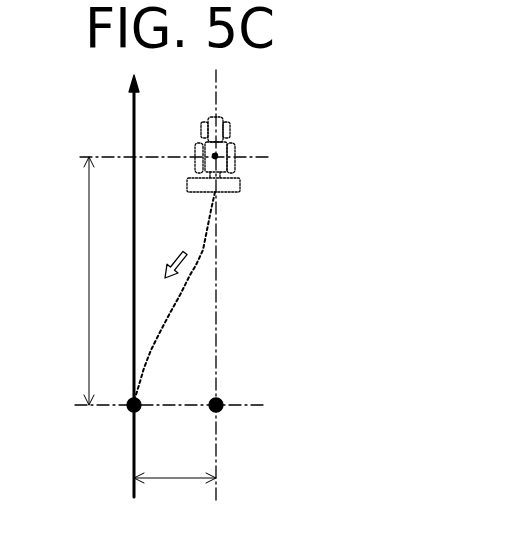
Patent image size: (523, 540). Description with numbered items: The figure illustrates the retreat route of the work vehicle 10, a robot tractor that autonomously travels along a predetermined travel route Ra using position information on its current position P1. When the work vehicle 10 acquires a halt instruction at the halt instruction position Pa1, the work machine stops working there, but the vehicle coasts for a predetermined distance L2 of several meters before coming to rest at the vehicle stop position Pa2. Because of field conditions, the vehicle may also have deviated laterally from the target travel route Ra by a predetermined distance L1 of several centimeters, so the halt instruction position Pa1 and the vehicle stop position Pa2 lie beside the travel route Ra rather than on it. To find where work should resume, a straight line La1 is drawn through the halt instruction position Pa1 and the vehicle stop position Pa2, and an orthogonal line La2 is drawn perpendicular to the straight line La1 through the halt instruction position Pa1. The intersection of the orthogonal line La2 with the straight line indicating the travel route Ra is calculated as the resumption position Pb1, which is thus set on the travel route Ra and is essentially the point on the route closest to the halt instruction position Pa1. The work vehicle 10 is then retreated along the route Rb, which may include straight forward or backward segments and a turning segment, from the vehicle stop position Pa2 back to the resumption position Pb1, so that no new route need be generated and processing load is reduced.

The work vehicle 10 is at (258, 130).
The current position P1 is at (217, 157).
The vehicle stop position Pa2 is at (215, 156).
The retreat route Rb is at (192, 268).
The straight line La1 is at (217, 332).
The orthogonal line La2 is at (257, 407).
The halt instruction position Pa1 is at (222, 398).
The resumption position Pb1 is at (128, 411).
The travel route Ra is at (134, 470).
The predetermined distance L1 is at (175, 468).
The predetermined distance L2 is at (76, 281).